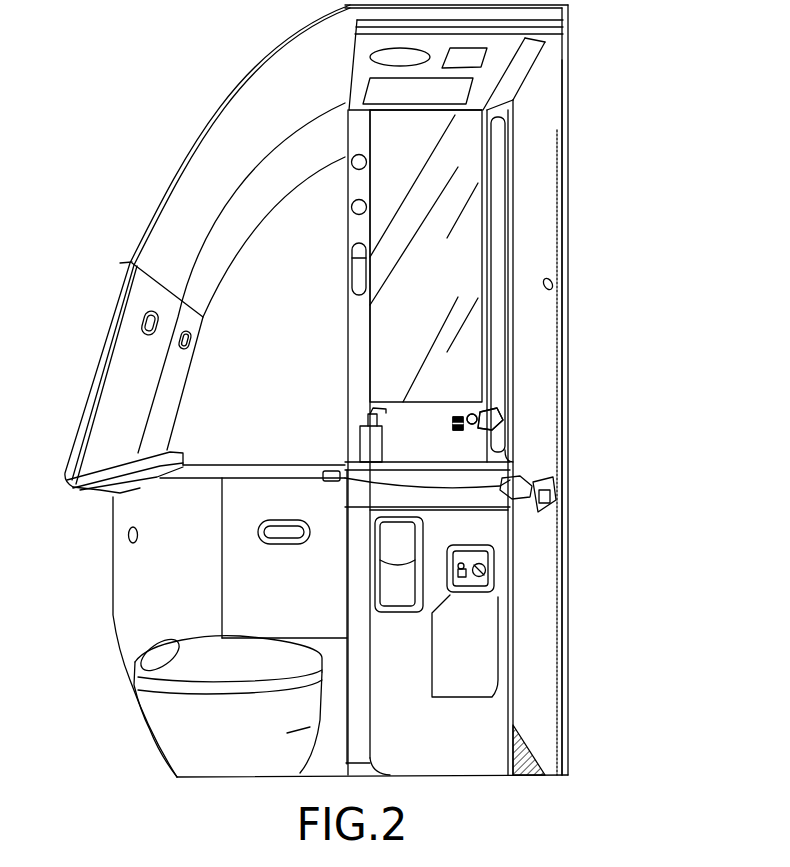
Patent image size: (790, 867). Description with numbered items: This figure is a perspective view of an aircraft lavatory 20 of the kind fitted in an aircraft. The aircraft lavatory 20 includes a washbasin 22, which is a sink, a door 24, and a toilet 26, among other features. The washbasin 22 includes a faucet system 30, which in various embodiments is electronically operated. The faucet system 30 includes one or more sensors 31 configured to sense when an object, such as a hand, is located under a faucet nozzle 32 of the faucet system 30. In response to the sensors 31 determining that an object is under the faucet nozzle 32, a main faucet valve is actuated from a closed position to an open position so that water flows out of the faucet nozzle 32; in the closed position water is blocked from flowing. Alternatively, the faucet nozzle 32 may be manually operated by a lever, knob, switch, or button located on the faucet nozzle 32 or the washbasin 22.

The aircraft lavatory 20 is at (125, 160).
The washbasin 22 is at (385, 392).
The door 24 is at (547, 535).
The toilet 26 is at (212, 660).
The faucet system 30 is at (535, 430).
The sensor 31 is at (458, 418).
The faucet nozzle 32 is at (478, 420).